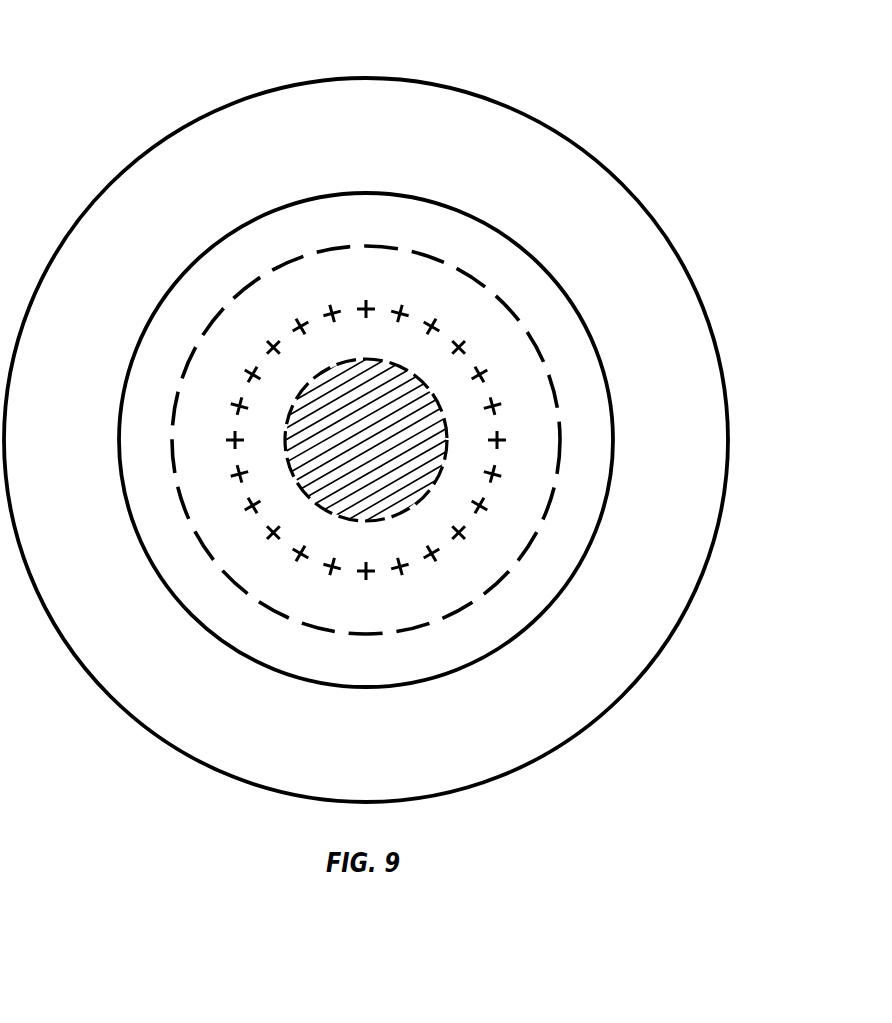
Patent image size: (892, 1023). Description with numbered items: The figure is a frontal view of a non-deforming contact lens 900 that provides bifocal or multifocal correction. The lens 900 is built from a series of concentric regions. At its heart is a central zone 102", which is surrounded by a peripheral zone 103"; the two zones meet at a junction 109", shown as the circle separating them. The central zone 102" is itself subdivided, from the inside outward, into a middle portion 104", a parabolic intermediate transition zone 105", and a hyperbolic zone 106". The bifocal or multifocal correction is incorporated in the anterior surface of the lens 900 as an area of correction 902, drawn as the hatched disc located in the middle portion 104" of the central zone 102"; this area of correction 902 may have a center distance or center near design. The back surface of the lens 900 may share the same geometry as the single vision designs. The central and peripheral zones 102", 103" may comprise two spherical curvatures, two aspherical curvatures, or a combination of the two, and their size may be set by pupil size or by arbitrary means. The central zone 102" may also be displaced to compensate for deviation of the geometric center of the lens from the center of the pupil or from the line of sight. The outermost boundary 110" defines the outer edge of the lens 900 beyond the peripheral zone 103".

The non-deforming contact lens 900 is at (130, 62).
The area of correction 902 is at (302, 432).
The central zone 102 is at (321, 280).
The peripheral zone 103 is at (692, 413).
The middle portion 104 is at (375, 337).
The parabolic intermediate transition zone 105 is at (502, 343).
The hyperbolic zone 106 is at (577, 388).
The junction 109 is at (605, 522).
The outer jacket 110 is at (730, 442).